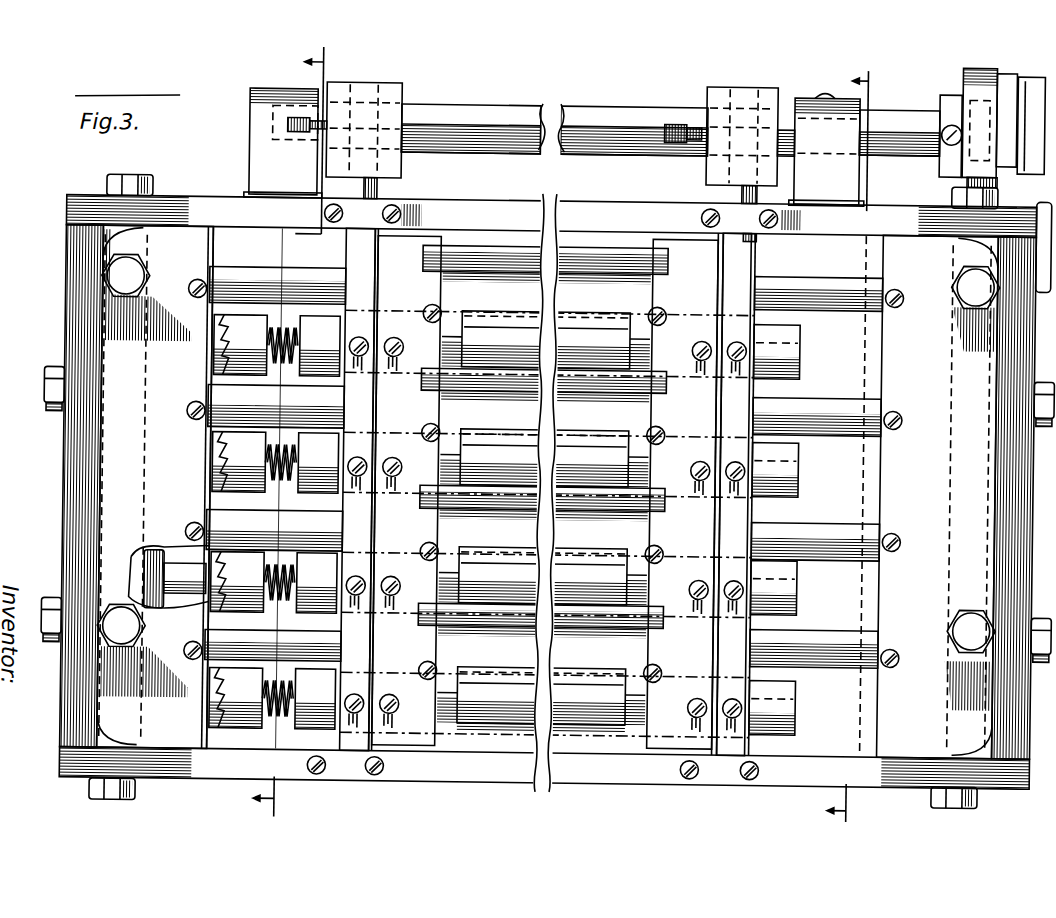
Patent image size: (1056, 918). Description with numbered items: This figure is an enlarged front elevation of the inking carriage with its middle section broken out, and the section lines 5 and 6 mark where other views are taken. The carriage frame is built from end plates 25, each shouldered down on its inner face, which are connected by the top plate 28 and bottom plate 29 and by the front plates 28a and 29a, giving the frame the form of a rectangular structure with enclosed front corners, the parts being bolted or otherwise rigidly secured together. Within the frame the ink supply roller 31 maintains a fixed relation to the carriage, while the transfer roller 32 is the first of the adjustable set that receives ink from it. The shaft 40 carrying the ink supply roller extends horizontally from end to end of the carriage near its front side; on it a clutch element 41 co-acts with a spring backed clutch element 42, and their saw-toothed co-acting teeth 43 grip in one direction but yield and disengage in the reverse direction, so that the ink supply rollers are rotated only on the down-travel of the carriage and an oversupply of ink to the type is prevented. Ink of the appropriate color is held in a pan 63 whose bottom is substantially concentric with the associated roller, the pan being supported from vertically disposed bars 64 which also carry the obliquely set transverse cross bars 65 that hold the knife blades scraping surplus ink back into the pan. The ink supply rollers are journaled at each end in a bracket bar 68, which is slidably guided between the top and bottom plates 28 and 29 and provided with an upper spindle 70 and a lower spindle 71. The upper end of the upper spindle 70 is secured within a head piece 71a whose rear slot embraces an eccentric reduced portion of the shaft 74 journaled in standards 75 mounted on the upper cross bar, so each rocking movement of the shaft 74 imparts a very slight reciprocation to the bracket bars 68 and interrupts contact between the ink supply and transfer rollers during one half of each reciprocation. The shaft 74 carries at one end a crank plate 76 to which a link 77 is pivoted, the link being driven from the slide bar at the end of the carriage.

The section line 5- 5 is at (297, 431).
The section line 6- 6 is at (857, 447).
The end plates 25 is at (80, 304).
The top plate 28 is at (222, 200).
The front plate 28a is at (155, 486).
The bottom plate 29 is at (236, 785).
The front plate 29a is at (939, 496).
The ink supply roller 31 is at (312, 300).
The transfer roller 32 is at (780, 290).
The shaft 40 is at (296, 342).
The clutch element 41 is at (212, 350).
The spring backed clutch element 42 is at (212, 376).
The co-acting teeth 43 is at (218, 320).
The pan 63 is at (543, 522).
The vertically disposed bars 64 is at (545, 492).
The transverse cross bars 65 is at (430, 370).
The bracket bar 68 is at (547, 491).
The upper spindle 70 is at (378, 193).
The lower spindle 71 is at (745, 752).
The head piece 71a is at (356, 90).
The shaft 74 is at (902, 122).
The standards 75 is at (554, 146).
The crank plate 76 is at (958, 70).
The link 77 is at (1018, 80).